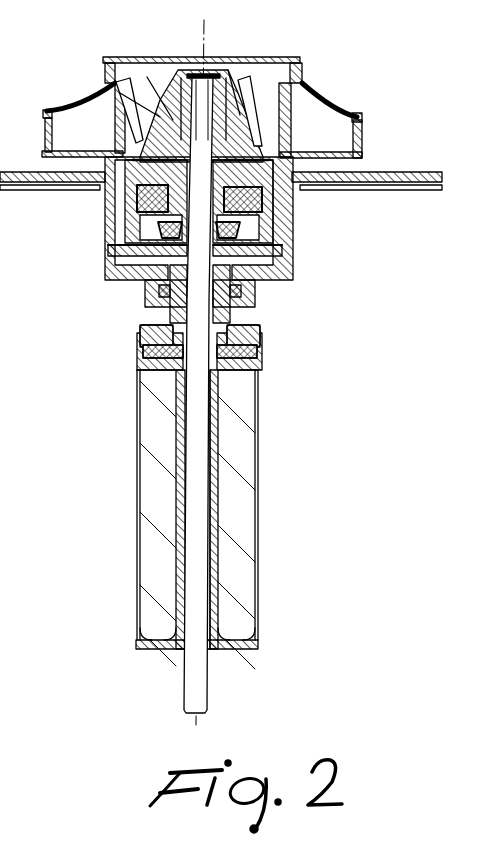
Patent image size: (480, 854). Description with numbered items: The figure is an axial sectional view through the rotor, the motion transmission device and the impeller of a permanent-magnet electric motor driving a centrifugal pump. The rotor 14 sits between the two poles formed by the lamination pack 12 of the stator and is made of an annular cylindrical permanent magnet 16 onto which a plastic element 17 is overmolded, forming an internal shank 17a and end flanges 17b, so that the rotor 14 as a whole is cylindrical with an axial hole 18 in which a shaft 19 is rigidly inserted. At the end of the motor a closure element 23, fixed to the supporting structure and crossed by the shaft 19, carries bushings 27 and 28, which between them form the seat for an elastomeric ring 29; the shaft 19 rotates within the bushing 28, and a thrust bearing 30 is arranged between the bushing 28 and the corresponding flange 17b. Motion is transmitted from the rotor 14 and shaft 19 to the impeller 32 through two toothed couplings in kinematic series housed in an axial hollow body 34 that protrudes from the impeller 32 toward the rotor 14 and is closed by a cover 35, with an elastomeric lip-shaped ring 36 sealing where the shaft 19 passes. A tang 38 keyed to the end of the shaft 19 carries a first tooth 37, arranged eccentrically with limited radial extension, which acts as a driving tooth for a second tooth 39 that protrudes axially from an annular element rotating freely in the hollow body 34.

The lamination pack 12 is at (102, 372).
The rotor 14 is at (225, 403).
The annular cylindrical permanent magnet 16 is at (254, 574).
The plastic element 17 is at (158, 561).
The internal shank 17a is at (213, 602).
The end flanges 17b is at (136, 362).
The axial hole 18 is at (178, 505).
The shaft 19 is at (192, 681).
The closure element 23 is at (404, 188).
The bushing 27 is at (148, 282).
The bushing 28 is at (150, 318).
The elastomeric ring 29 is at (256, 298).
The thrust bearing 30 is at (262, 323).
The impeller 32 is at (314, 90).
The axial hollow body 34 is at (302, 236).
The cover 35 is at (264, 248).
The elastomeric lip-shaped ring 36 is at (118, 228).
The first tooth 37 is at (238, 158).
The tang 38 is at (118, 95).
The second tooth 39 is at (290, 206).